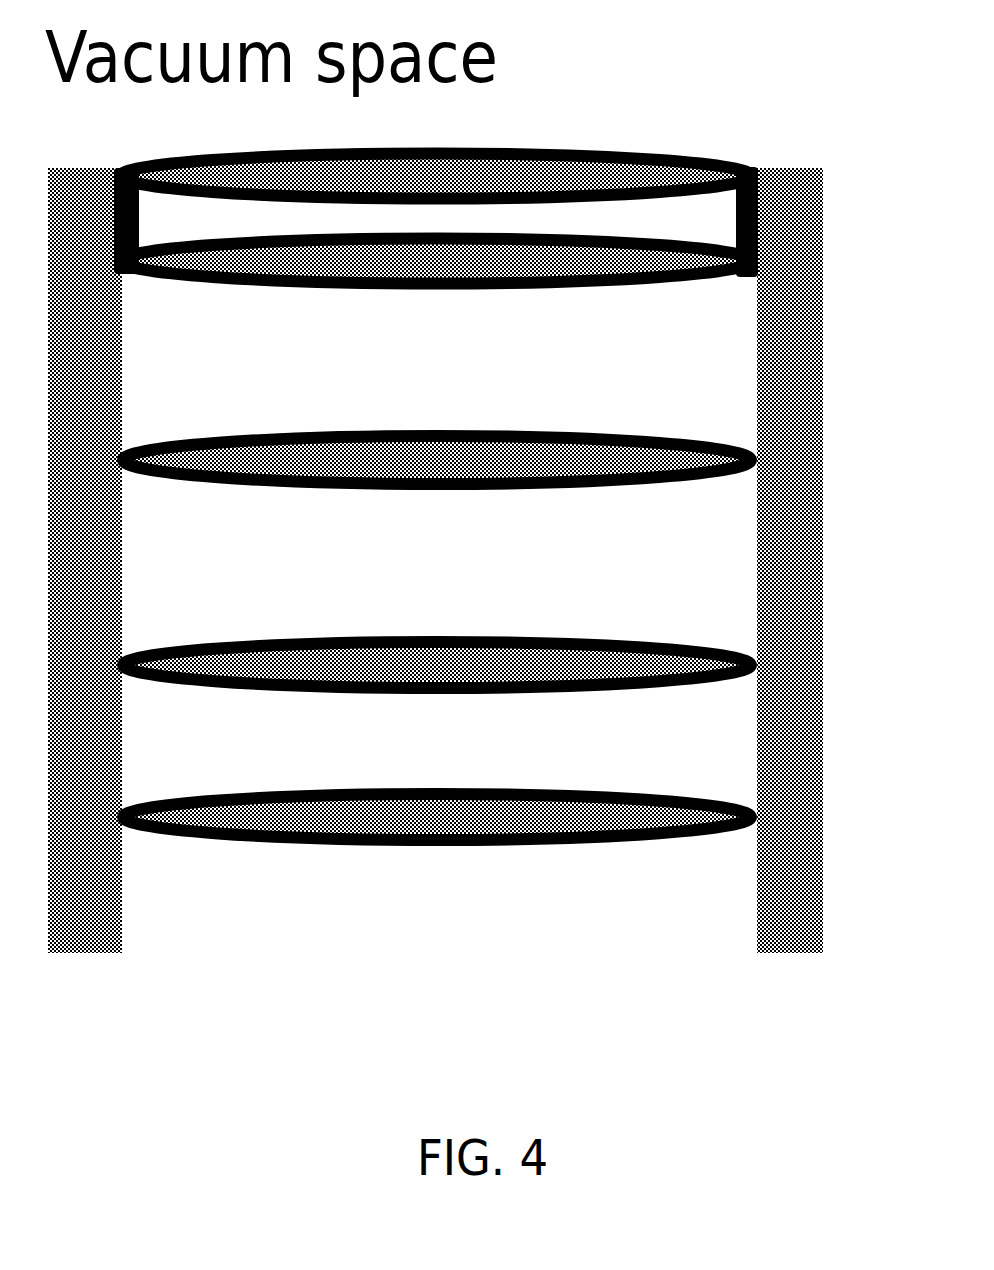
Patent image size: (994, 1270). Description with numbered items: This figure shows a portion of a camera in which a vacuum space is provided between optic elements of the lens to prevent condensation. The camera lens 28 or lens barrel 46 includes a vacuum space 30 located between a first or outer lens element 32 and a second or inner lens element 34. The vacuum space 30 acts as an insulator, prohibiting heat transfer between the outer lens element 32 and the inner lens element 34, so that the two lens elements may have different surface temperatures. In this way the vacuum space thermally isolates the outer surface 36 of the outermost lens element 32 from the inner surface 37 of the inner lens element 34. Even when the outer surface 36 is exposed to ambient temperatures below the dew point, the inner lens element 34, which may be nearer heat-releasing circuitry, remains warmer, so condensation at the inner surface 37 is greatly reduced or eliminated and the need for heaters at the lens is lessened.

The camera lens 28 is at (638, 998).
The vacuum space 30 is at (160, 207).
The first or outer lens element 32 is at (710, 157).
The second or inner lens element 34 is at (672, 280).
The outer surface 36 is at (567, 177).
The inner surface 37 is at (562, 287).
The lens barrel 46 is at (115, 892).